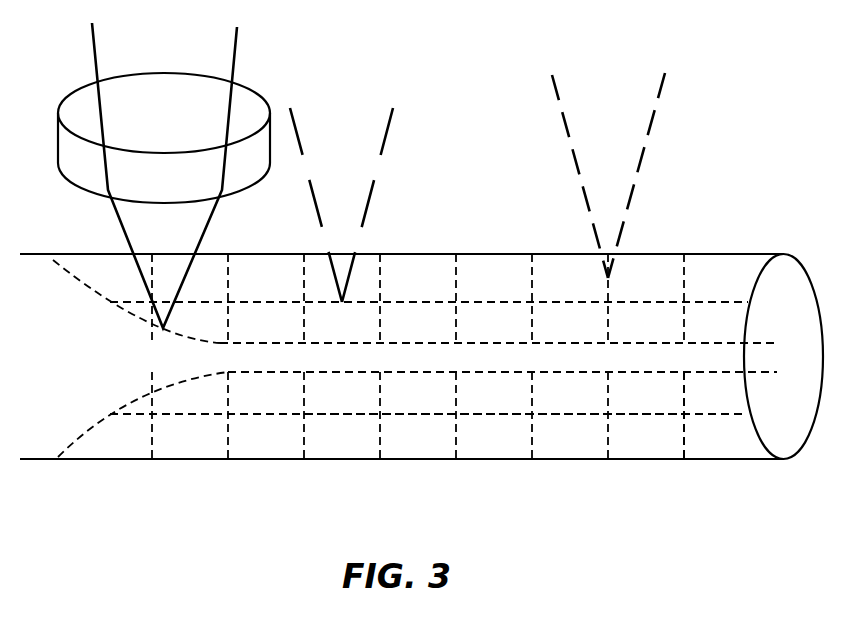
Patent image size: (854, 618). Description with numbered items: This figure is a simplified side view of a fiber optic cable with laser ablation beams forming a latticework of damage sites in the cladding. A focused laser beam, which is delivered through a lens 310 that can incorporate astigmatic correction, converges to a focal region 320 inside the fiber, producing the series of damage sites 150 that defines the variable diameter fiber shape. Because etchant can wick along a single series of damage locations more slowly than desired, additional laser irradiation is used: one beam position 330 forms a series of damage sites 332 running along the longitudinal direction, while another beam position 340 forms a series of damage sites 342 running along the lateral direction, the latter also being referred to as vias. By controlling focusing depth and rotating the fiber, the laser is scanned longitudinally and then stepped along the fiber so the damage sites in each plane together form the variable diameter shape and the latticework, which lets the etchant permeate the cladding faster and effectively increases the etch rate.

The series of damage sites 150 is at (407, 342).
The lens 310 is at (256, 90).
The focused laser beam focal point 320 is at (155, 336).
The second laser beam position 330 is at (343, 322).
The third laser beam position 340 is at (632, 282).
The series of damage sites running along the longitudinal direction 332 is at (483, 413).
The series of damage sites running along the lateral direction 342 is at (683, 440).